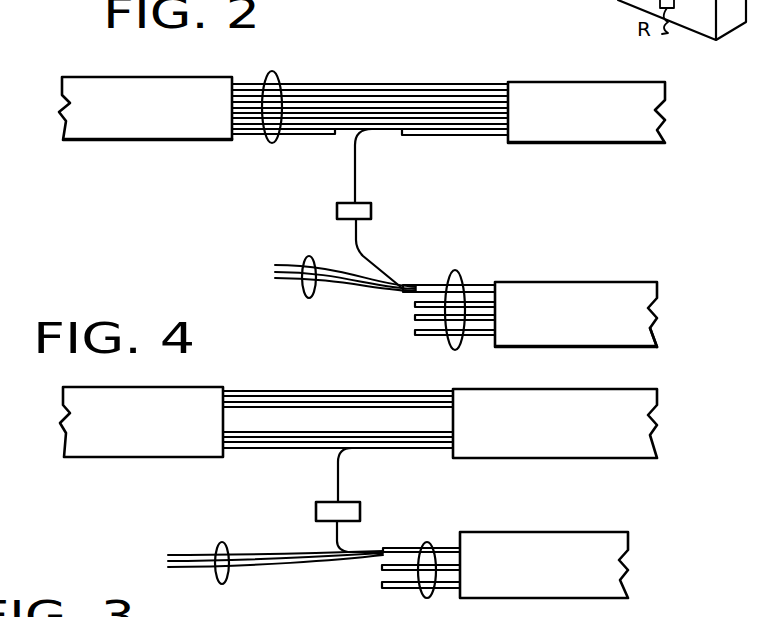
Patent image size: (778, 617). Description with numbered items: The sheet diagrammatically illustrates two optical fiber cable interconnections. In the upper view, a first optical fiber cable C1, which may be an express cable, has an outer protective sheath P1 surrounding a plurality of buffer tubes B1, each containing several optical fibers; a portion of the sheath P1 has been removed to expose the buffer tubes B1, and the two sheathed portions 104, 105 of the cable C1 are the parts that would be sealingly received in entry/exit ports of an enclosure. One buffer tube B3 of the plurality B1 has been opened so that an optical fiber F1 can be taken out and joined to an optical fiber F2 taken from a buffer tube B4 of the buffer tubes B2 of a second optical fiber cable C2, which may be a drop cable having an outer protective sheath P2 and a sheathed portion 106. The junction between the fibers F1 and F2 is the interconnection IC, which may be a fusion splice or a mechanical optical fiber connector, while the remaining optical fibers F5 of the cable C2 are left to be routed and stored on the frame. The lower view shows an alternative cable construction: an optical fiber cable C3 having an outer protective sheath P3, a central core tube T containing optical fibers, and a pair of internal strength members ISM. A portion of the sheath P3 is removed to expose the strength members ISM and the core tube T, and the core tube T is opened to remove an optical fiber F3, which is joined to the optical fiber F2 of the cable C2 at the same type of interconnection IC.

In FIG. 2, the outer protective sheath P1 is at (90, 86).
In FIG. 2, the portion of optical fiber cable C1 105 is at (158, 127).
In FIG. 2, the buffer tubes B1 is at (274, 74).
In FIG. 2, the buffer tube B3 is at (308, 136).
In FIG. 2, the optical fiber F1 is at (357, 167).
In FIG. 2, the optical fiber interconnection IC is at (337, 212).
In FIG. 4, the optical fiber interconnection IC is at (316, 512).
In FIG. 2, the optical fiber F2 is at (373, 253).
In FIG. 4, the optical fiber F2 is at (333, 539).
In FIG. 2, the buffer tube B4 is at (428, 282).
In FIG. 4, the buffer tube B4 is at (394, 544).
In FIG. 2, the buffer tubes B2 is at (455, 274).
In FIG. 4, the buffer tubes B2 is at (430, 544).
In FIG. 2, the optical fibers F5 is at (309, 298).
In FIG. 4, the optical fibers F5 is at (225, 545).
In FIG. 2, the first optical fiber cable C1 is at (588, 62).
In FIG. 2, the portion of optical fiber cable C1 104 is at (620, 120).
In FIG. 2, the second optical fiber cable C2 is at (585, 282).
In FIG. 4, the second optical fiber cable C2 is at (553, 532).
In FIG. 2, the outer protective sheath P2 is at (632, 328).
In FIG. 2, the portion of optical fiber cable C2 106 is at (530, 360).
In FIG. 4, the outer protective sheath P3 is at (170, 392).
In FIG. 4, the internal strength members ISM is at (322, 376).
In FIG. 4, the central core tube T is at (340, 422).
In FIG. 4, the optical fiber cable C3 is at (624, 388).
In FIG. 4, the optical fiber F3 is at (338, 471).